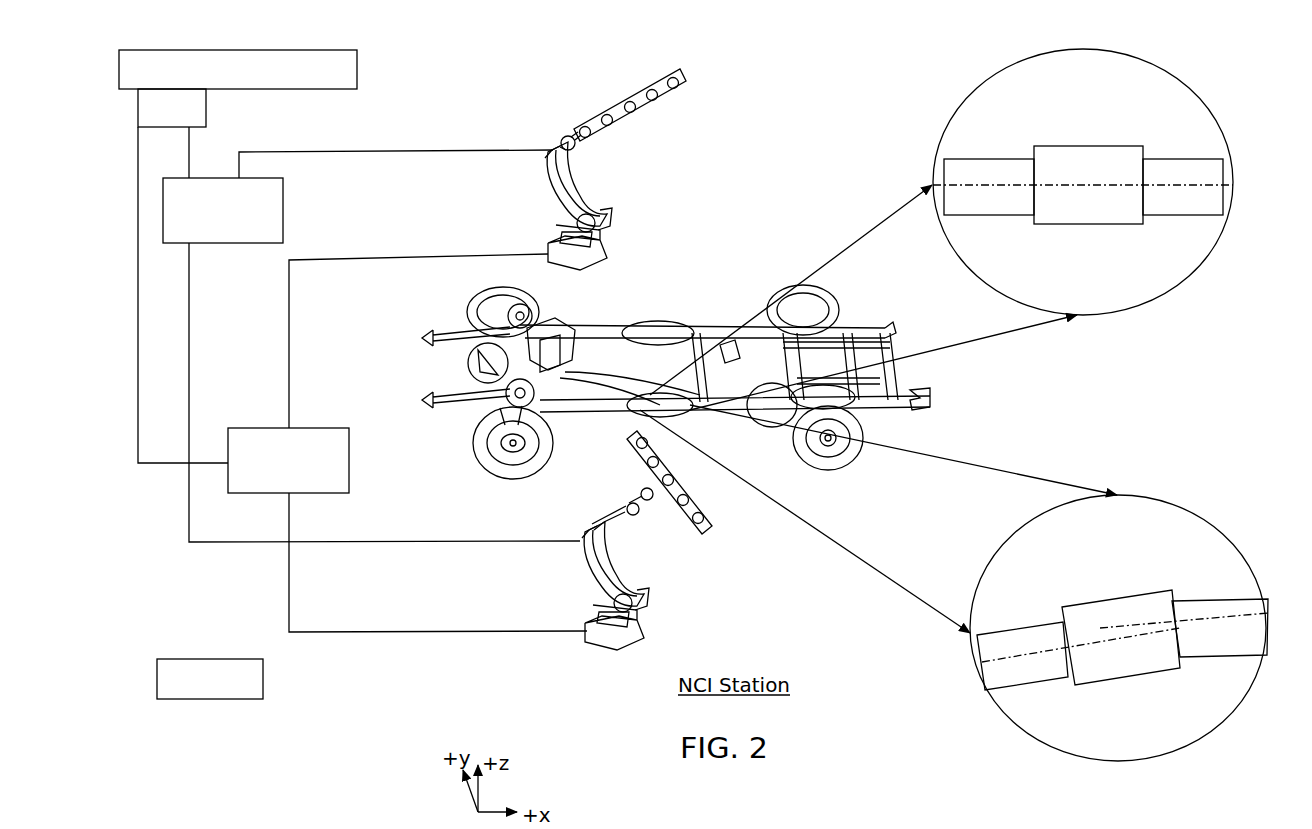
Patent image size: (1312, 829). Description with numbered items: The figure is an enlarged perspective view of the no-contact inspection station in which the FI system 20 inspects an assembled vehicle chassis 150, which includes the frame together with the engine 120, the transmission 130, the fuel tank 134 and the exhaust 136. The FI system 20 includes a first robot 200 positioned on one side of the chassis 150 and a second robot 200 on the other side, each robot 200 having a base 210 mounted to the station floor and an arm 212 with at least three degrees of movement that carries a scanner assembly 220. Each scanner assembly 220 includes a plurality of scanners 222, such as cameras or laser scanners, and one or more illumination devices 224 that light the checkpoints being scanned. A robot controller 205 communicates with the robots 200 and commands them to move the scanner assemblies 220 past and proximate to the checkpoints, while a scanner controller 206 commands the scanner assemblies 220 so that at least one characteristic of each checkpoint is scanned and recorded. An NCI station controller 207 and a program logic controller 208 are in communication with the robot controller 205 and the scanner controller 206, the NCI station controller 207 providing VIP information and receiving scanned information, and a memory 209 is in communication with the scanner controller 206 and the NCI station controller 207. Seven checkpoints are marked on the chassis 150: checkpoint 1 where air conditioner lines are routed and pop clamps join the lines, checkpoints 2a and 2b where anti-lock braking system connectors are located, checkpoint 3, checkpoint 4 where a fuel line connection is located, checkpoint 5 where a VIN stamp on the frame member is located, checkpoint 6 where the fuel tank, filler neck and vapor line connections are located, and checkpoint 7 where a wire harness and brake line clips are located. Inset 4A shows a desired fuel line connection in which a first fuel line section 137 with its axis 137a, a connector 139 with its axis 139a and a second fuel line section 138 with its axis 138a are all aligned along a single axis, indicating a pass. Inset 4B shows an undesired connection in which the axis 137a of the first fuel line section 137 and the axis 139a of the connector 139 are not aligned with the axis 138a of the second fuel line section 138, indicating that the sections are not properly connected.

The checkpoint 1 is at (450, 358).
The checkpoint 2a is at (483, 410).
The checkpoint 2b is at (530, 298).
The checkpoint 3 is at (550, 318).
The checkpoint 4 is at (633, 417).
The checkpoint 5 is at (650, 322).
The checkpoint 6 is at (835, 428).
The checkpoint 7 is at (878, 387).
The FI system 20 is at (833, 98).
The engine 120 is at (497, 322).
The transmission 130 is at (582, 360).
The fuel tank 134 is at (752, 420).
The exhaust 136 is at (732, 353).
The first fuel line section 137 is at (970, 158).
The axis 137a is at (982, 185).
The second fuel line section 138 is at (1190, 158).
The axis 138a is at (1165, 185).
The connector 139 is at (1067, 145).
The axis 139a is at (1065, 185).
The chassis 150 is at (735, 235).
The robot 200 is at (522, 192).
The robot controller 205 is at (262, 428).
The scanner controller 206 is at (283, 208).
The NCI station controller 207 is at (347, 49).
The program logic controller (PLC) 208 is at (206, 108).
The memory 209 is at (263, 680).
The base 210 is at (593, 257).
The arm 212 is at (575, 140).
The scanner assembly 220 is at (653, 84).
The scanner 222 is at (678, 84).
The illumination device 224 is at (630, 117).
The inset 4A is at (1170, 73).
The inset 4B is at (1167, 500).